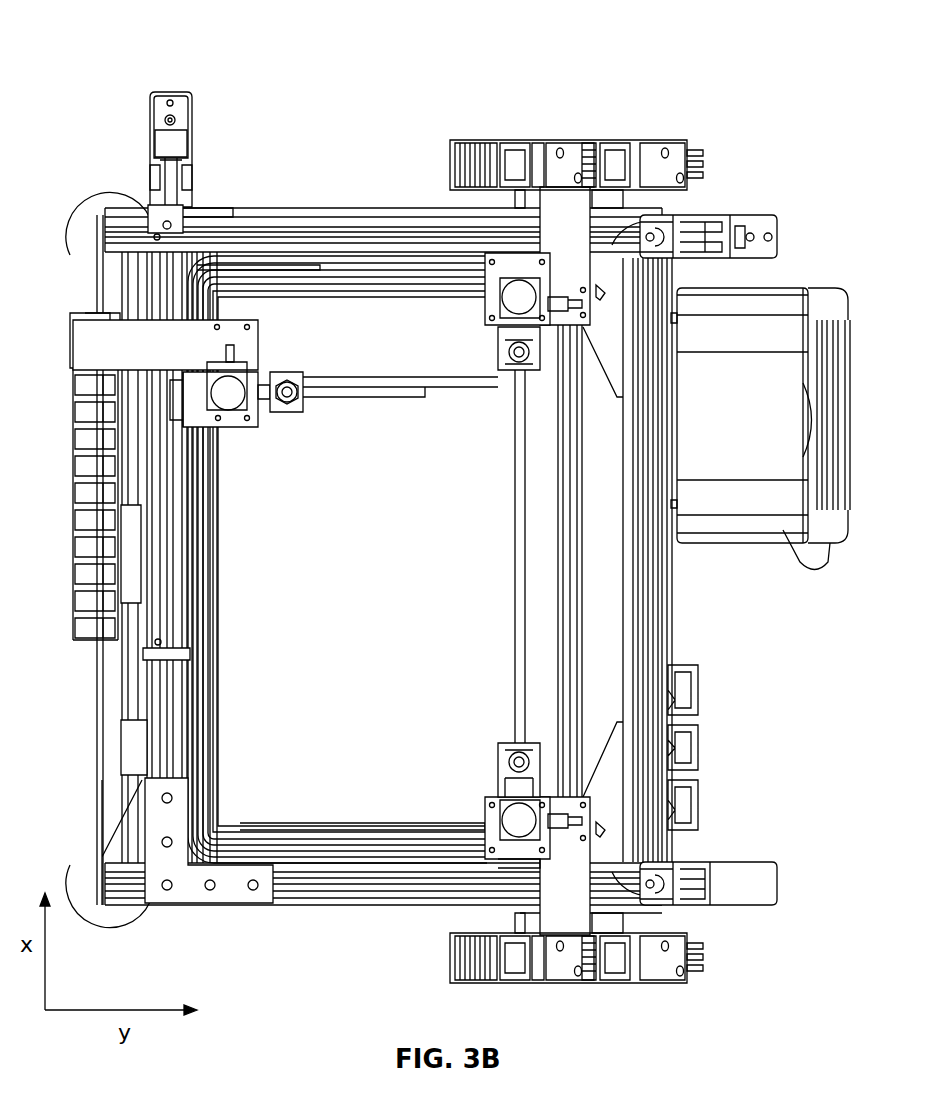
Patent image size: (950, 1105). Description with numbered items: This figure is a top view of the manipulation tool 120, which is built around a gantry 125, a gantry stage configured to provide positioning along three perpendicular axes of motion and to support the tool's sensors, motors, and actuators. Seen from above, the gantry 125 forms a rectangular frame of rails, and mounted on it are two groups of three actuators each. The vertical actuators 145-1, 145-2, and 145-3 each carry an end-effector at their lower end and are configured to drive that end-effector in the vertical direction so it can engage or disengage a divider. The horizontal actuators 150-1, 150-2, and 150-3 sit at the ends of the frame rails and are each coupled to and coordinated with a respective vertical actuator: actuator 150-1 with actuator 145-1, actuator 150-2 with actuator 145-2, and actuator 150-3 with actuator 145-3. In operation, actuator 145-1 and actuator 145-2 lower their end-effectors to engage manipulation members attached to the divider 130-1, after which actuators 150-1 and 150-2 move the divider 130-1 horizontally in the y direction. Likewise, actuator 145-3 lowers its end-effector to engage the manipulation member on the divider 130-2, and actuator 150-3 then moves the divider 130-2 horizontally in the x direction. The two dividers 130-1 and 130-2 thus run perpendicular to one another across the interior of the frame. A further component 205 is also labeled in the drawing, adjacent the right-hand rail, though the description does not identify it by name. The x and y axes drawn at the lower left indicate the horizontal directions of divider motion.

The manipulation tool 120 is at (116, 28).
The gantry 125 is at (222, 893).
The divider 130-1 is at (514, 540).
The divider 130-2 is at (383, 398).
The actuator 145-1 is at (512, 352).
The actuator 145-2 is at (500, 758).
The actuator 145-3 is at (290, 382).
The actuator 150-1 is at (755, 232).
The actuator 150-2 is at (768, 880).
The actuator 150-3 is at (168, 120).
The base plate 205 is at (605, 585).